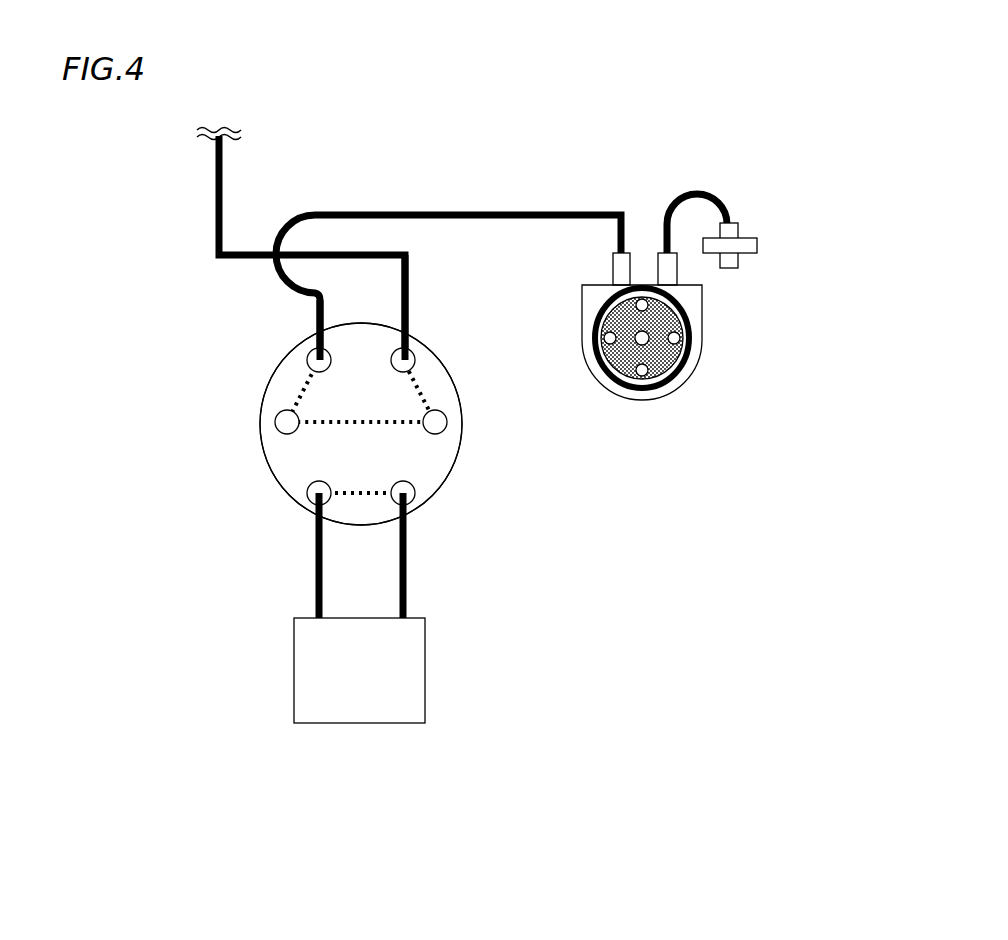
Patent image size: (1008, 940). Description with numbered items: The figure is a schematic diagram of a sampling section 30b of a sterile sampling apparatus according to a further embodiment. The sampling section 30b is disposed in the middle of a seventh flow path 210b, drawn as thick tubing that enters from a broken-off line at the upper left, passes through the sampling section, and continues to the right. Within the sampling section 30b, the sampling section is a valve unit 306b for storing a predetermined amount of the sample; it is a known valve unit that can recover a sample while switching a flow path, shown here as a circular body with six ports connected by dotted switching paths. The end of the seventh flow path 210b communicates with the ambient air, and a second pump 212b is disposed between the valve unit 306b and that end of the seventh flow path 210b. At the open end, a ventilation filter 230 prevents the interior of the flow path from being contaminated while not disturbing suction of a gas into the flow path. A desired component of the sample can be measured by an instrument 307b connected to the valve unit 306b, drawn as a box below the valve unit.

The sampling section 30b is at (168, 393).
The seventh flow path 210b is at (216, 226).
The second pump 212b is at (702, 322).
The ventilation filter 230 is at (757, 245).
The valve unit 306b is at (455, 465).
The instrument 307b is at (425, 660).